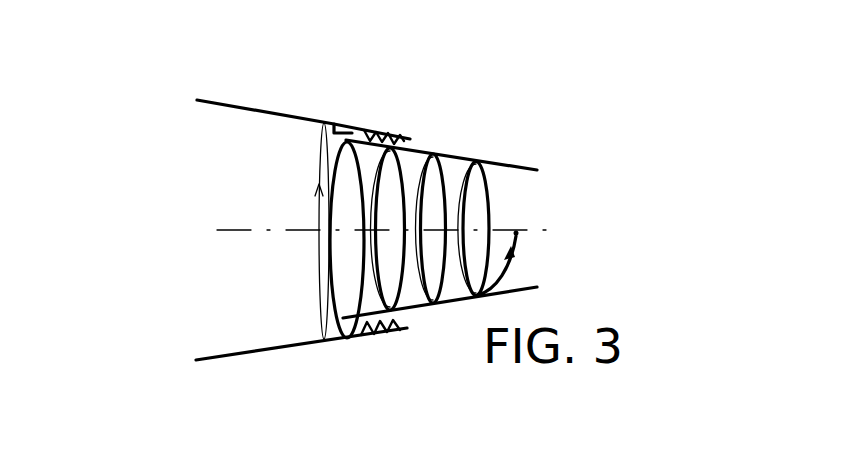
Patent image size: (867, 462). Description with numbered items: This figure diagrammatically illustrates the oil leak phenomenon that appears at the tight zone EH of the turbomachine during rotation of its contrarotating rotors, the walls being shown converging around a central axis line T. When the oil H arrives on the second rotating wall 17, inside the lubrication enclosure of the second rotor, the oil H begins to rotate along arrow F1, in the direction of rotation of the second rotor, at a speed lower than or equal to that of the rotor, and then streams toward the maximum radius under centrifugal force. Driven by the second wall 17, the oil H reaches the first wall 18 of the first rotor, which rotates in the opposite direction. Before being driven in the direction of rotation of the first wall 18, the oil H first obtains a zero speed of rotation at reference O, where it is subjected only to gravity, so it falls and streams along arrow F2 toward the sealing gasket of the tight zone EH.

The first wall 18 is at (215, 103).
The second rotating wall 17 is at (506, 168).
The zero speed of rotation O is at (333, 120).
The arrow F2 is at (347, 124).
The tight zone EH is at (385, 126).
The oil H is at (319, 276).
The arrow F1 is at (316, 188).
The axis of the coil T is at (220, 231).